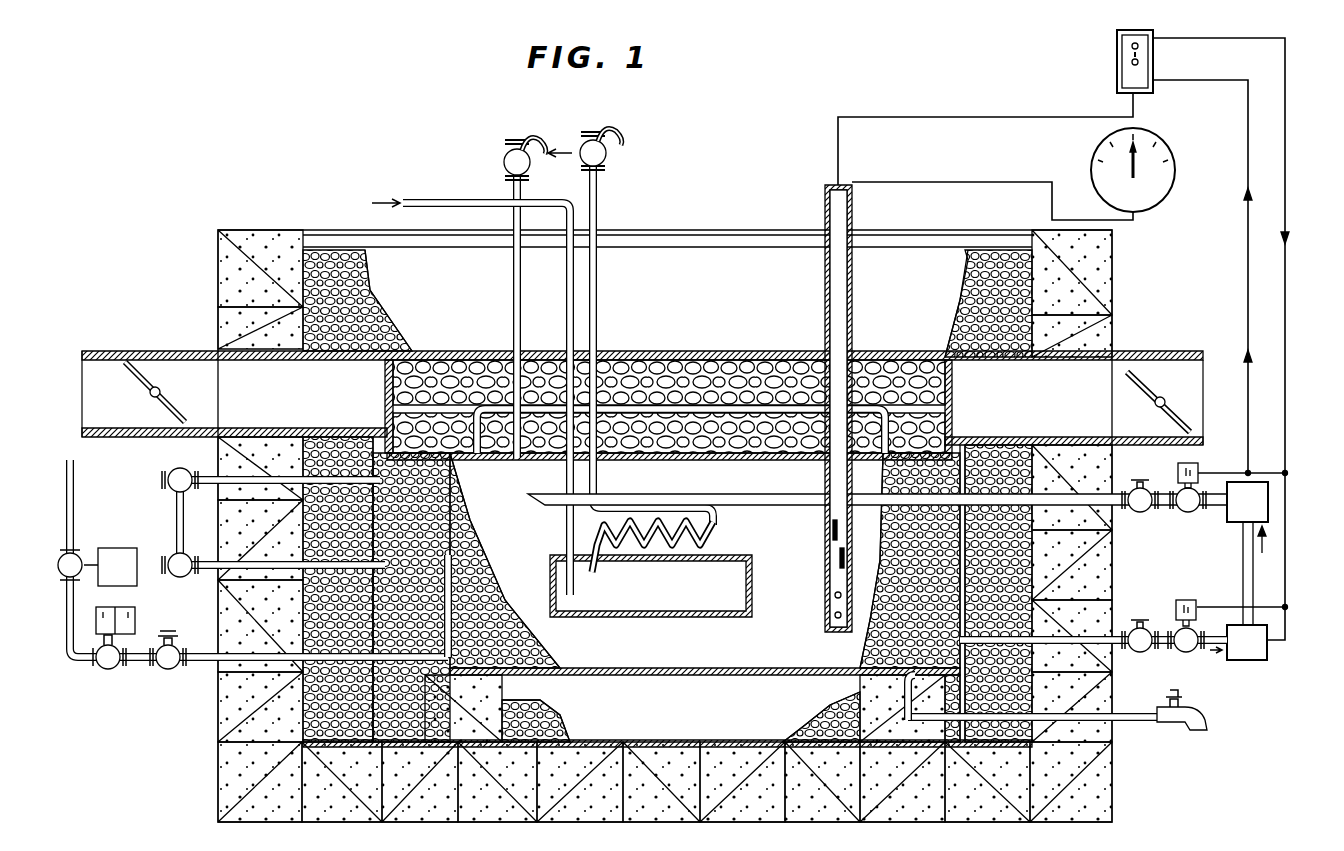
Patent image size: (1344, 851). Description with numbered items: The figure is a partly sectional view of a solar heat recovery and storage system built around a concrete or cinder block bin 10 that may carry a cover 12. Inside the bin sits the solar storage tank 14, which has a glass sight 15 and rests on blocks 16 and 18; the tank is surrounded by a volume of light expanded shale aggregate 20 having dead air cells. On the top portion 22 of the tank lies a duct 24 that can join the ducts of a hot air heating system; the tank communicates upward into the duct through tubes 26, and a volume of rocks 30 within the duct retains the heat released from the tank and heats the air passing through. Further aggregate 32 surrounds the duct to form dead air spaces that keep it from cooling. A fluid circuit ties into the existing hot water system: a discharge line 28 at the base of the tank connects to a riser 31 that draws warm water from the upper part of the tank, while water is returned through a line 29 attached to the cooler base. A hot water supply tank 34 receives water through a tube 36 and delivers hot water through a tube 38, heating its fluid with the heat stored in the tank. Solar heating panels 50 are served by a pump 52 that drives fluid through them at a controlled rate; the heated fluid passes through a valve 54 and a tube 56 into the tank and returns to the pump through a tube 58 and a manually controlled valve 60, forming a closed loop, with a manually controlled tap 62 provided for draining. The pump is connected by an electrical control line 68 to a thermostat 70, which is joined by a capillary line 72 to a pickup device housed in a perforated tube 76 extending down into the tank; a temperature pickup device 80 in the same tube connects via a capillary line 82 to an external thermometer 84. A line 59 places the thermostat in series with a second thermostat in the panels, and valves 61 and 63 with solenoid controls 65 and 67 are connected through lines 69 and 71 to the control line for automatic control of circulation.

The bin 10 is at (1112, 818).
The cover 12 is at (706, 234).
The solar storage tank 14 is at (653, 680).
The glass sight 15 is at (176, 519).
The block 16 is at (490, 688).
The block 18 is at (862, 690).
The aggregate 20 is at (300, 710).
The top portion 22 is at (507, 462).
The duct 24 is at (477, 360).
The tubes 26 is at (748, 405).
The discharge line 28 is at (178, 665).
The line 29 is at (205, 642).
The rocks 30 is at (655, 362).
The riser 31 is at (462, 592).
The further aggregate 32 is at (360, 300).
The hot water supply tank 34 is at (695, 612).
The tube 36 is at (566, 533).
The tube 38 is at (598, 478).
The solar heating panels 50 is at (1237, 522).
The pump 52 is at (1268, 670).
The valve 54 is at (1141, 512).
The tube 56 is at (757, 505).
The tube 58 is at (1100, 626).
The line 59 is at (1202, 276).
The valve 60 is at (1140, 654).
The valve 61 is at (1178, 490).
The tap 62 is at (1206, 728).
The valve 63 is at (1190, 654).
The solenoid control 65 is at (1200, 463).
The solenoid control 67 is at (1178, 600).
The electrical control line 68 is at (1220, 38).
The line 69 is at (1286, 470).
The thermostat 70 is at (1117, 44).
The line 71 is at (1285, 605).
The capillary line 72 is at (1010, 117).
The tube 76 is at (826, 480).
The temperature pickup device 80 is at (834, 556).
The capillary line 82 is at (1048, 182).
The thermometer 84 is at (1177, 180).